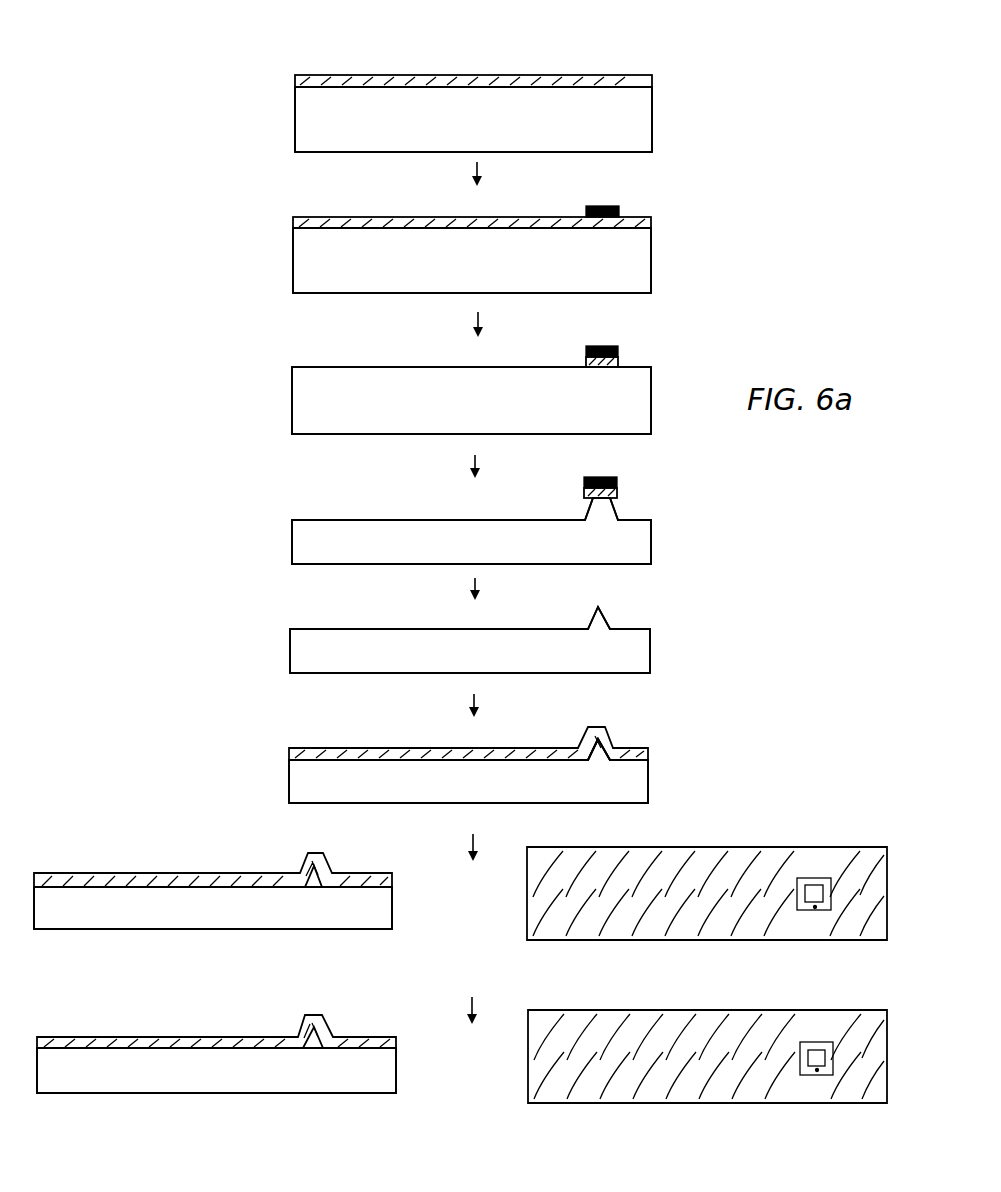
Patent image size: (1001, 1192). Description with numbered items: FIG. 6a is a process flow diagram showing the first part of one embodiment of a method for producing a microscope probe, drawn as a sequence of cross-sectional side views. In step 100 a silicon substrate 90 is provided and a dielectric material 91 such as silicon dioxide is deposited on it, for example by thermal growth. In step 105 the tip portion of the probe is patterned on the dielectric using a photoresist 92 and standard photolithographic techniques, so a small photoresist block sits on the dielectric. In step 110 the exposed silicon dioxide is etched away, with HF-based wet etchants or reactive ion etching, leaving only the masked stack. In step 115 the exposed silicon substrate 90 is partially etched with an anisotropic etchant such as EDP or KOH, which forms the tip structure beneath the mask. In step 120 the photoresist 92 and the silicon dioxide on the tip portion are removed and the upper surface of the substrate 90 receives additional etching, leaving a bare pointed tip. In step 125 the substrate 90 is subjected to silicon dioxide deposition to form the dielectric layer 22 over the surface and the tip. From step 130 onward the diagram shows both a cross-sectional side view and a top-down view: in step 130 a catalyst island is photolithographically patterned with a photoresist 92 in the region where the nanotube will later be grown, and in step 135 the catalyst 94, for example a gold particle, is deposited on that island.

The dielectric layer 22 is at (640, 748).
The silicon substrate 90 is at (643, 131).
The dielectric material 91 is at (628, 80).
The photoresist 92 is at (609, 205).
The catalyst 94 is at (817, 1072).
The step 100 is at (268, 130).
The step 105 is at (263, 274).
The step 110 is at (255, 415).
The step 115 is at (251, 557).
The step 120 is at (258, 671).
The step 125 is at (250, 803).
The step 130 is at (505, 911).
The step 135 is at (505, 1079).